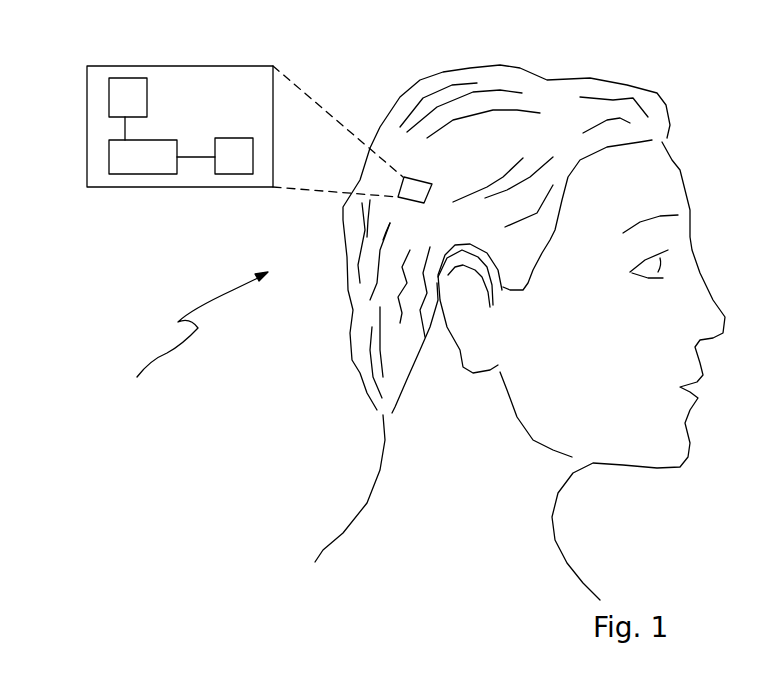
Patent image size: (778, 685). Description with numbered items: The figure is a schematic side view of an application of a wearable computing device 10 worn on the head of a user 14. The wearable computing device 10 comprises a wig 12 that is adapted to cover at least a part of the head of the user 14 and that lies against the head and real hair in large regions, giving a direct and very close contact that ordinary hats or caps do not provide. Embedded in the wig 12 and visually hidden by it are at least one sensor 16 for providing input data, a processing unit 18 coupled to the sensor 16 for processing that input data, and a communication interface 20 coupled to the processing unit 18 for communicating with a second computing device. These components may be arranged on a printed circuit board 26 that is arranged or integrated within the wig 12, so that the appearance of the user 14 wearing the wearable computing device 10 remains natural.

The wearable computing device 10 is at (191, 336).
The wig 12 is at (452, 112).
The user 14 is at (662, 180).
The sensor 16 is at (127, 90).
The processing unit 18 is at (138, 163).
The communication interface 20 is at (239, 163).
The printed circuit board 26 is at (97, 125).